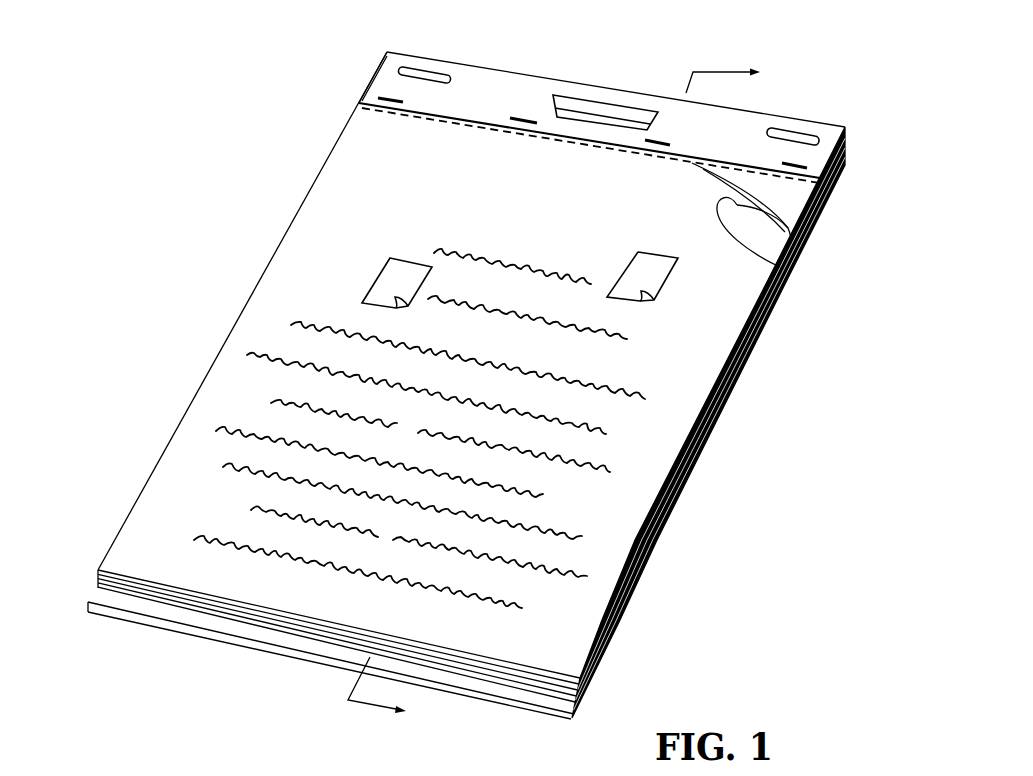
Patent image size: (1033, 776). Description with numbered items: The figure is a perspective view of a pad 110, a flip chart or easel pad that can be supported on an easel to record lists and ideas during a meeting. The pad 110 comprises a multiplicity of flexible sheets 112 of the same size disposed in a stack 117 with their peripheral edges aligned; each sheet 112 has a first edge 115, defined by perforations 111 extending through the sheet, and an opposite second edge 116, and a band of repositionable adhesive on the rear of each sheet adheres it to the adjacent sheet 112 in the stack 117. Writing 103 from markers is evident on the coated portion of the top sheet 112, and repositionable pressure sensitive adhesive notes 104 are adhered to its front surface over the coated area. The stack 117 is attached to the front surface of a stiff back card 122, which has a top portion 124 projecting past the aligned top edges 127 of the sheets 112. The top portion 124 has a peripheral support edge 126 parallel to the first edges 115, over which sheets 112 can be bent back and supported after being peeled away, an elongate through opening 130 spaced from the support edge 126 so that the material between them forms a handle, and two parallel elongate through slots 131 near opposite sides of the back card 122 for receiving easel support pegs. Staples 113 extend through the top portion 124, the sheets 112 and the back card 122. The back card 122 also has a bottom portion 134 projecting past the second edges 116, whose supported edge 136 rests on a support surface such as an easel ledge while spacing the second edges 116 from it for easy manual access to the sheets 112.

The writing 103 is at (328, 323).
The repositionable pressure sensitive adhesive notes 104 is at (396, 279).
The pad 110 is at (233, 77).
The perforations 111 is at (785, 180).
The flexible sheets 112 is at (637, 515).
The staples 113 is at (390, 95).
The first edge 115 is at (778, 266).
The second edge 116 is at (98, 575).
The stack 117 is at (576, 614).
The back card 122 is at (472, 69).
The top portion 124 is at (505, 92).
The support edge 126 is at (642, 93).
The top edges 127 is at (846, 156).
The through opening 130 is at (577, 114).
The through slots 131 is at (419, 64).
The bottom portion 134 is at (155, 607).
The supported edge 136 is at (243, 643).